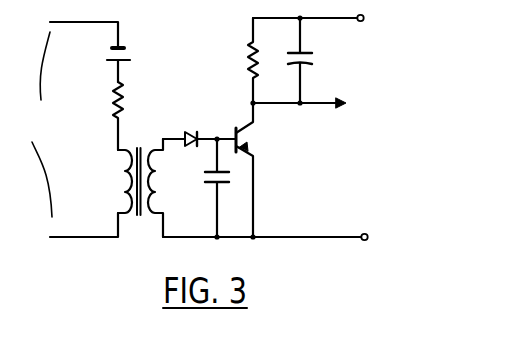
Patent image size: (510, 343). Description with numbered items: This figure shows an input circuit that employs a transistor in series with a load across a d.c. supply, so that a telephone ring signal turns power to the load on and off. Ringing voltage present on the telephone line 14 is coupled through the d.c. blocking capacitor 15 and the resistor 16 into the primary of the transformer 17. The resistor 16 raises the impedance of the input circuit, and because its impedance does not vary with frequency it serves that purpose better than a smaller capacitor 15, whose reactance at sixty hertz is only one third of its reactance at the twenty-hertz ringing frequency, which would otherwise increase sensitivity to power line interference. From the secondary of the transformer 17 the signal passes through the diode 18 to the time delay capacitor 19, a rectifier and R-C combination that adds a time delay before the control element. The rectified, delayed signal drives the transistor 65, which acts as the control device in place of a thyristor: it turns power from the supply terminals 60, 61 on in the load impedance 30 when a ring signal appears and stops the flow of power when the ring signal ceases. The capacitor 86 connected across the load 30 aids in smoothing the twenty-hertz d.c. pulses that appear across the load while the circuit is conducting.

The telephone line 14 is at (67, 129).
The d.c. blocking capacitor 15 is at (108, 66).
The resistor 16 is at (112, 99).
The transformer 17 is at (113, 200).
The diode 18 is at (183, 130).
The time delay capacitor 19 is at (223, 160).
The load impedance 30 is at (242, 68).
The d.c. supply terminal 60 is at (366, 14).
The d.c. supply terminal 61 is at (367, 229).
The transistor 65 is at (262, 142).
The capacitor 86 is at (312, 67).